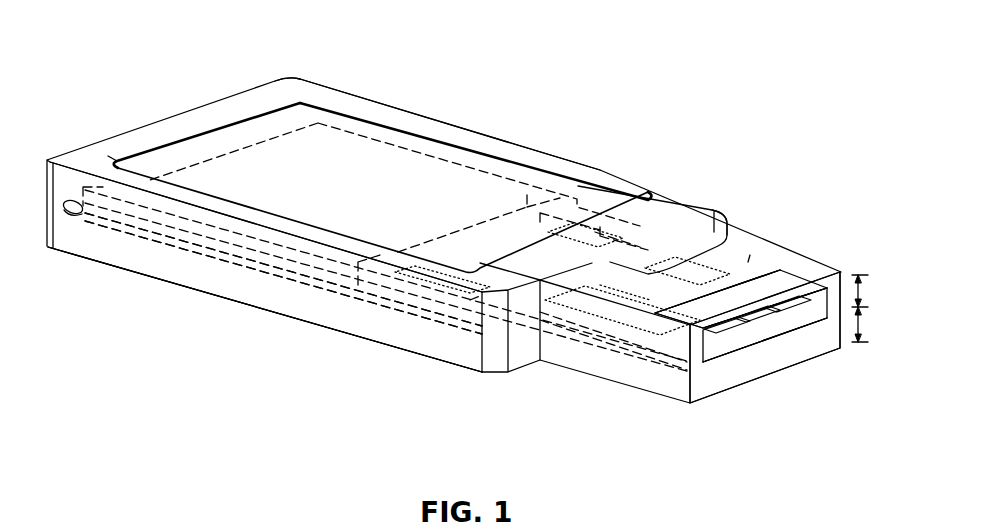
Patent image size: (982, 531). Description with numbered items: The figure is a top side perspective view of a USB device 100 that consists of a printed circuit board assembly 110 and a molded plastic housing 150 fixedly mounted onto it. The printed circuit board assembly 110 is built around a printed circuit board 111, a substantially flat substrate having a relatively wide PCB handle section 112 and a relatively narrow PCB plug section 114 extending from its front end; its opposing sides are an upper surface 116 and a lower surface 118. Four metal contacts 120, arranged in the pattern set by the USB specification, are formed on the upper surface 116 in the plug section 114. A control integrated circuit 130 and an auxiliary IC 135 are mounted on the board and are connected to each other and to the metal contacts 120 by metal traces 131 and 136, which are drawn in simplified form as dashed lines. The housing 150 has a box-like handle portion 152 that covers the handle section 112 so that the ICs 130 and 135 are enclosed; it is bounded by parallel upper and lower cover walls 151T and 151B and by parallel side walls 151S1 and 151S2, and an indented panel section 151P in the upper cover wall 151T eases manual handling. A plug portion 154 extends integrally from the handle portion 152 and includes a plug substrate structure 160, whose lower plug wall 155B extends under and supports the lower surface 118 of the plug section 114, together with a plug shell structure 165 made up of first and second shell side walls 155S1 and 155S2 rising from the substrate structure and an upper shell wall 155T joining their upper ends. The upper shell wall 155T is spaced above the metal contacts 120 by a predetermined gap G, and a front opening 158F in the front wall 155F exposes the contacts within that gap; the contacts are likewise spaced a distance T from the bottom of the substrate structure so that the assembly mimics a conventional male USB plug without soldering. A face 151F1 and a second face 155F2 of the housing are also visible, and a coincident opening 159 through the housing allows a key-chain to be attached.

The USB device 100 is at (754, 102).
The printed circuit board assembly 110 is at (410, 150).
The printed circuit board 111 is at (342, 325).
The PCB handle section 112 is at (478, 312).
The PCB plug section 114 is at (605, 326).
The upper surface 116 is at (424, 302).
The lower surface 118 is at (428, 326).
The metal contacts 120 is at (788, 315).
The control integrated circuit 130 is at (630, 257).
The metal traces 131 is at (655, 262).
The auxiliary IC 135 is at (530, 203).
The metal traces 136 is at (636, 240).
The housing 150 is at (228, 97).
The lower cover wall 151B is at (250, 100).
The housing first end face 151F1 is at (521, 352).
The indented panel section 151P is at (192, 143).
The first side wall 151S1 is at (229, 282).
The second side wall 151S2 is at (378, 113).
The upper cover wall 151T is at (108, 155).
The handle portion 152 is at (445, 361).
The plug portion 154 is at (626, 385).
The lower plug wall 155B is at (728, 366).
The plug substrate structure 160 is at (729, 372).
The front wall 155F is at (803, 347).
The connector second face 155F2 is at (748, 257).
The first shell side wall 155S1 is at (712, 238).
The second shell side wall 155S2 is at (773, 262).
The upper shell wall 155T is at (748, 260).
The front opening 158F is at (815, 301).
The opening 159 is at (78, 215).
The plug shell structure 165 is at (838, 160).
The gap G is at (871, 285).
The distance T is at (870, 320).